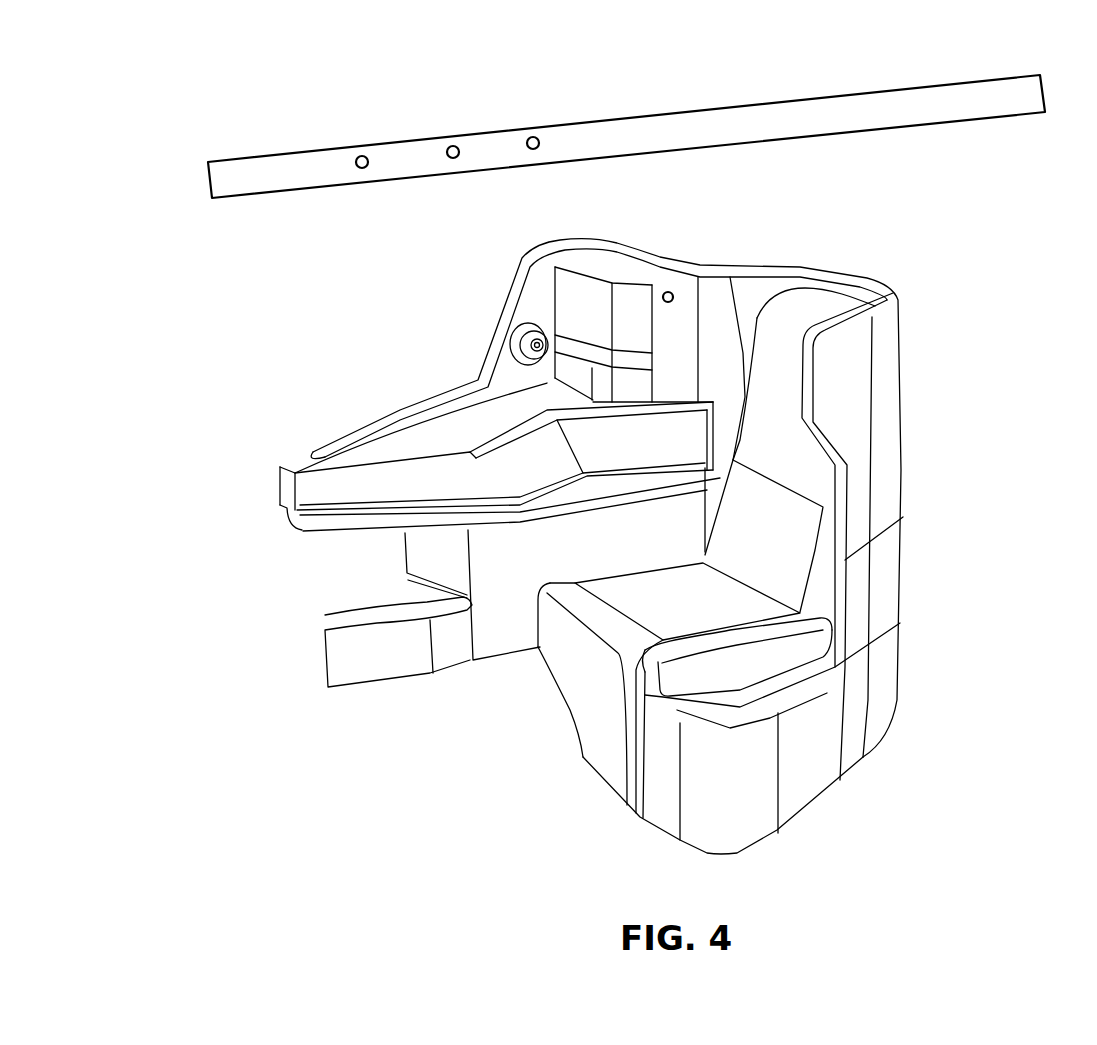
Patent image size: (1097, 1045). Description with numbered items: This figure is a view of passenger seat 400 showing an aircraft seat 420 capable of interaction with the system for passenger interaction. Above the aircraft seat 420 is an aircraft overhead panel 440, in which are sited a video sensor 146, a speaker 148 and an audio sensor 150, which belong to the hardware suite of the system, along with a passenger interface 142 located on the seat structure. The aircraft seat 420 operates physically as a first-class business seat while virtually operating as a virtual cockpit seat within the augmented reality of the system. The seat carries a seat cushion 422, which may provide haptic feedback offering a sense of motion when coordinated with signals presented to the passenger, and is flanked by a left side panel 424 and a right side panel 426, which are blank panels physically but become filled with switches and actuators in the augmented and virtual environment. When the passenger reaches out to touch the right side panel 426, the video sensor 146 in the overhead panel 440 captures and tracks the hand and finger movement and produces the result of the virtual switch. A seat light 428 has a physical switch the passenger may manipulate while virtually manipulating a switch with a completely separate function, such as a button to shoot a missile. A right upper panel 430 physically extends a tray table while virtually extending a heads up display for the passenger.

The view of passenger seat 400 is at (80, 140).
The aircraft overhead panel 440 is at (1045, 100).
The video sensor 146 is at (367, 165).
The audio sensor 150 is at (458, 155).
The speaker 148 is at (538, 146).
The passenger interface 142 is at (672, 293).
The aircraft seat 420 is at (798, 253).
The seat cushion 422 is at (793, 555).
The left side panel 424 is at (758, 642).
The right side panel 426 is at (310, 492).
The seat light 428 is at (528, 343).
The right upper panel 430 is at (632, 300).